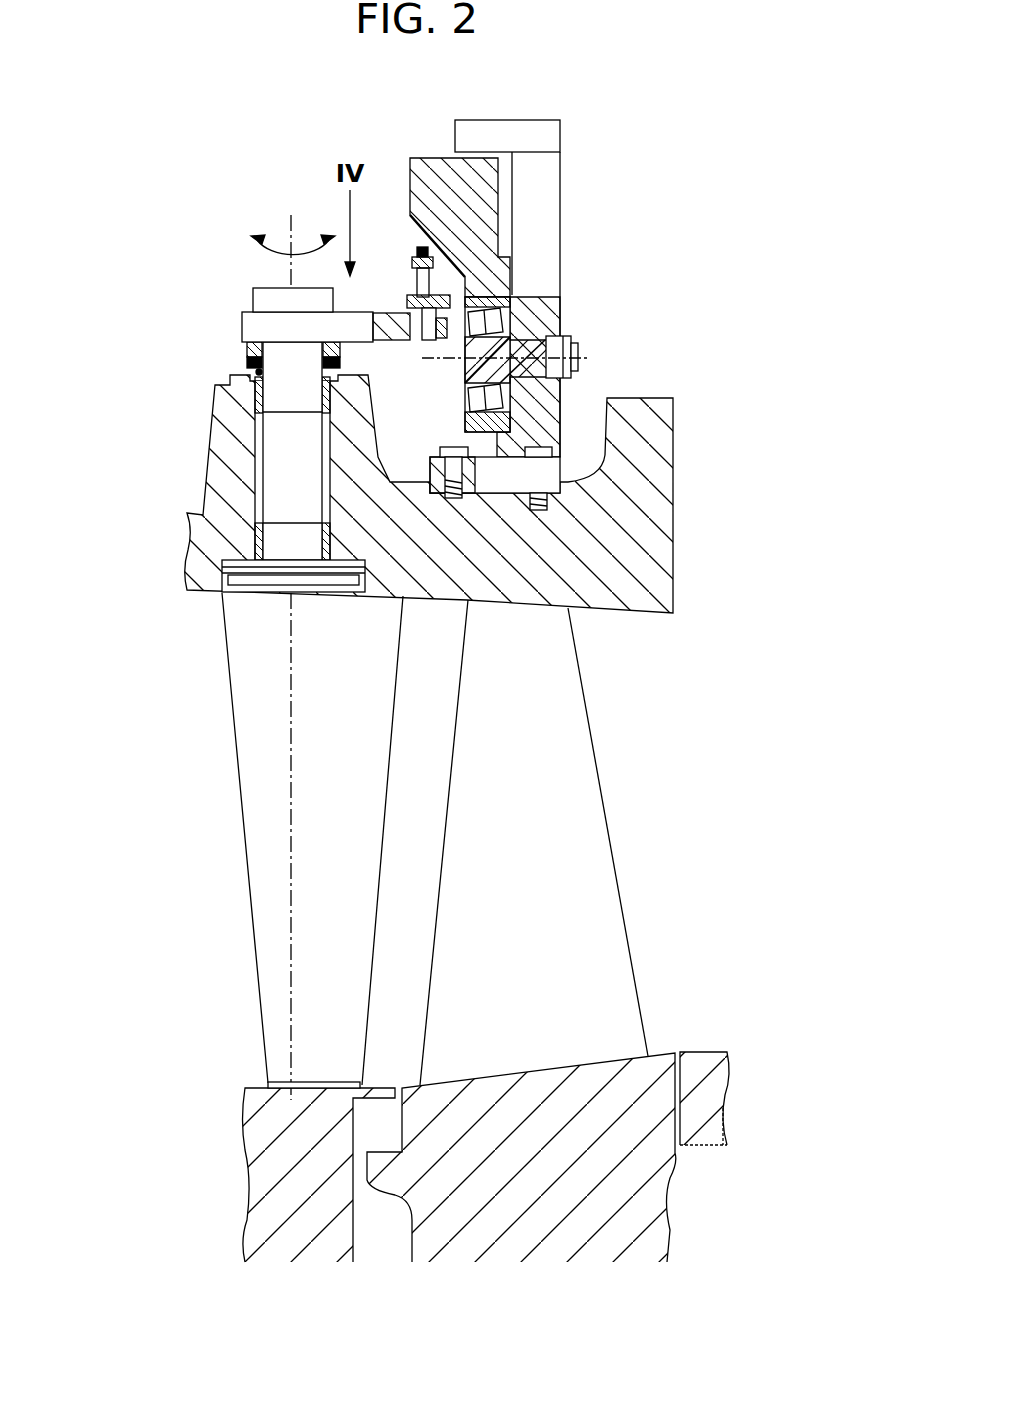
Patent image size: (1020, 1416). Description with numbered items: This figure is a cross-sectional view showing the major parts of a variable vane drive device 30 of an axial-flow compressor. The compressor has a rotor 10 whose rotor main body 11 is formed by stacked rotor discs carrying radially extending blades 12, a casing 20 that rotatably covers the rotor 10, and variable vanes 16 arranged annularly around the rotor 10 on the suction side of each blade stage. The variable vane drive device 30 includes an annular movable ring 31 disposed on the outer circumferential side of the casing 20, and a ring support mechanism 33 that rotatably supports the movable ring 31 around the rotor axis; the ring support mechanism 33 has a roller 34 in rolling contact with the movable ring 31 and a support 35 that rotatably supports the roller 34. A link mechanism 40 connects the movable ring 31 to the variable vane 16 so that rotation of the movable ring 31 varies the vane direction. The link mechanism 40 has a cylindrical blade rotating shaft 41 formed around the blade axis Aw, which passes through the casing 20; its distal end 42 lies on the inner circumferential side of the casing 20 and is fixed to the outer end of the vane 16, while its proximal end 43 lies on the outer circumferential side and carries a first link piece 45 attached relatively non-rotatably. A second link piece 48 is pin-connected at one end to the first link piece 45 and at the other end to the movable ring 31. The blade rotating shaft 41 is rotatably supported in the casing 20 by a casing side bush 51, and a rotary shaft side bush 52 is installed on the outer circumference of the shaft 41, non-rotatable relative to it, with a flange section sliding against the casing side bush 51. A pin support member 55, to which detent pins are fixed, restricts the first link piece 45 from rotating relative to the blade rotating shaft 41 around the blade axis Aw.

The rotor 10 is at (248, 1077).
The rotor main body 11 is at (660, 1190).
The blades 12 is at (605, 870).
The vanes 16 is at (245, 700).
The casing 20 is at (635, 390).
The variable vane drive device 30 is at (524, 286).
The movable ring 31 is at (432, 160).
The ring support mechanism 33 is at (551, 341).
The roller 34 is at (525, 371).
The support 35 is at (550, 243).
The link mechanism 40 is at (259, 413).
The blade rotating shaft 41 is at (272, 453).
The distal end 42 is at (278, 545).
The proximal end 43 is at (272, 348).
The first link piece 45 is at (248, 322).
The second link piece 48 is at (408, 300).
The casing side bush 51 is at (260, 392).
The rotary shaft side bush 52 is at (256, 372).
The pin support member 55 is at (260, 290).
The blade axis Aw is at (292, 765).